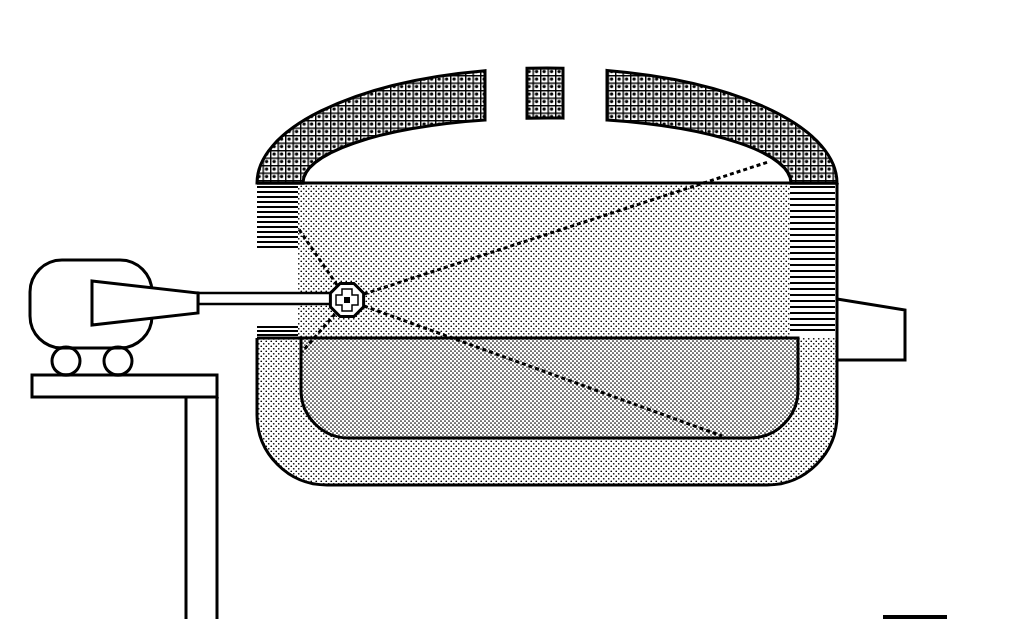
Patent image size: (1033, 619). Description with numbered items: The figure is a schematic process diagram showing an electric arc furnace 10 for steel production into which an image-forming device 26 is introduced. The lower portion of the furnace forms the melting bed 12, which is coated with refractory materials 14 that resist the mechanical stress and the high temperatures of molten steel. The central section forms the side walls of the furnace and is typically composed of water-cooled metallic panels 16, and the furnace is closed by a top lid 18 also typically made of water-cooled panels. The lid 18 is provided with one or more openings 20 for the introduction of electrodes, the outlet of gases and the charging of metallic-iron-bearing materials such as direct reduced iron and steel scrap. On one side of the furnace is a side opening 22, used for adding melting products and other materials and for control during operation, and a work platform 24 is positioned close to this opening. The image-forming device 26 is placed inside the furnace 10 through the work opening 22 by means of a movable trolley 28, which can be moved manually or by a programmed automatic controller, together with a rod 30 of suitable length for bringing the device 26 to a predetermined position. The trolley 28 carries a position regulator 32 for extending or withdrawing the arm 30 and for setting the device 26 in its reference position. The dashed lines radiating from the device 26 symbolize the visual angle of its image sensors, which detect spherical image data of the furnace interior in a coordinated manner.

The electric arc furnace 10 is at (223, 155).
The melting bed 12 is at (340, 473).
The refractory materials 14 is at (418, 422).
The water-cooled metallic panels 16 is at (792, 252).
The top lid 18 is at (722, 88).
The openings 20 is at (588, 78).
The side opening 22 is at (273, 257).
The work platform 24 is at (152, 390).
The image-forming device 26 is at (333, 289).
The movable trolley 28 is at (57, 272).
The rod 30 is at (248, 307).
The position regulator 32 is at (165, 297).